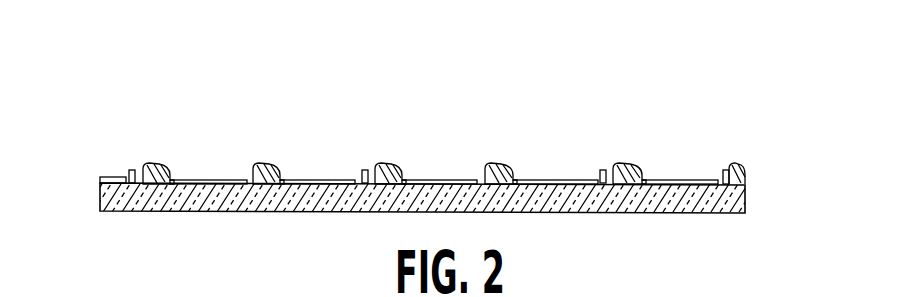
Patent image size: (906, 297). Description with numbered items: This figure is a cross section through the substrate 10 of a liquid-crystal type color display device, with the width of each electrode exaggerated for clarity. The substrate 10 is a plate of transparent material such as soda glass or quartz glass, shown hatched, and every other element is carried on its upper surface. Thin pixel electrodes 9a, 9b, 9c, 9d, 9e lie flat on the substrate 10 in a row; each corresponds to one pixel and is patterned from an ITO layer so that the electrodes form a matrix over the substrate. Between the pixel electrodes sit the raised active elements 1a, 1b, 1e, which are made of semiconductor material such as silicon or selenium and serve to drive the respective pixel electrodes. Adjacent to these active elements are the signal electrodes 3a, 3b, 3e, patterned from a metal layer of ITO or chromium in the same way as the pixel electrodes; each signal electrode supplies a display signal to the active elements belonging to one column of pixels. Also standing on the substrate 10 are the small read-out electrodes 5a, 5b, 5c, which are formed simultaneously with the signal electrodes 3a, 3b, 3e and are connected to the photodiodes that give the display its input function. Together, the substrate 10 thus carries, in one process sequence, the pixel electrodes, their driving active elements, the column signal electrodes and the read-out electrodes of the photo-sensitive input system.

The active element 1a is at (157, 164).
The active element 1b is at (277, 167).
The active element 1e is at (635, 165).
The signal electrode 3a is at (142, 177).
The signal electrode 3b is at (250, 178).
The signal electrode 3e is at (617, 177).
The read-out electrode 5a is at (127, 177).
The read-out electrode 5b is at (365, 178).
The read-out electrode 5c is at (602, 177).
The pixel electrode 9a is at (207, 179).
The pixel electrode 9b is at (329, 178).
The pixel electrode 9c is at (445, 178).
The pixel electrode 9d is at (553, 178).
The pixel electrode 9e is at (687, 178).
The substrate 10 is at (737, 203).